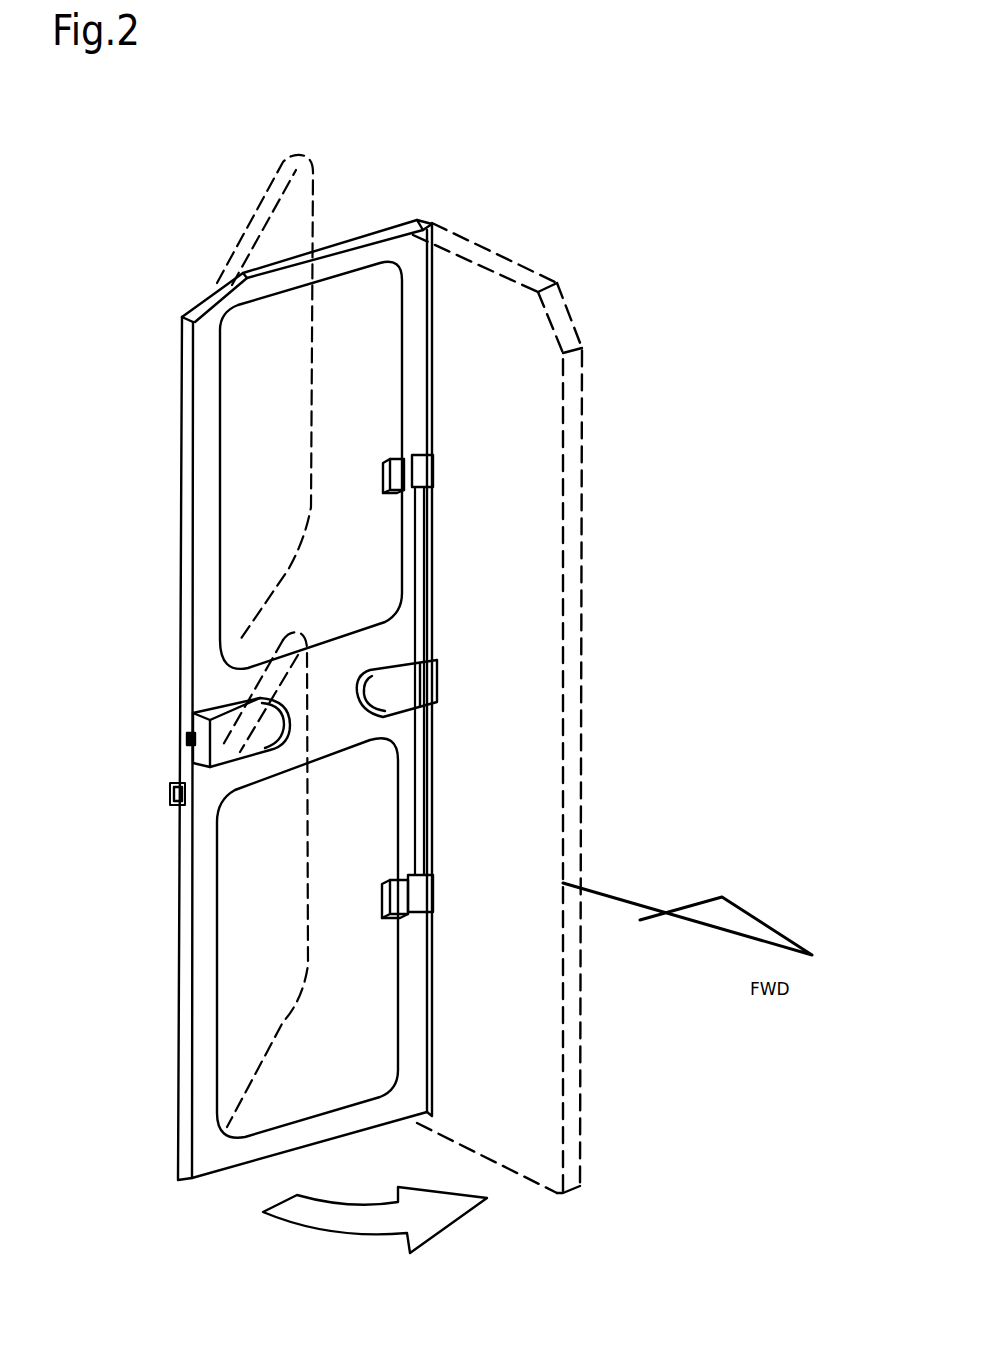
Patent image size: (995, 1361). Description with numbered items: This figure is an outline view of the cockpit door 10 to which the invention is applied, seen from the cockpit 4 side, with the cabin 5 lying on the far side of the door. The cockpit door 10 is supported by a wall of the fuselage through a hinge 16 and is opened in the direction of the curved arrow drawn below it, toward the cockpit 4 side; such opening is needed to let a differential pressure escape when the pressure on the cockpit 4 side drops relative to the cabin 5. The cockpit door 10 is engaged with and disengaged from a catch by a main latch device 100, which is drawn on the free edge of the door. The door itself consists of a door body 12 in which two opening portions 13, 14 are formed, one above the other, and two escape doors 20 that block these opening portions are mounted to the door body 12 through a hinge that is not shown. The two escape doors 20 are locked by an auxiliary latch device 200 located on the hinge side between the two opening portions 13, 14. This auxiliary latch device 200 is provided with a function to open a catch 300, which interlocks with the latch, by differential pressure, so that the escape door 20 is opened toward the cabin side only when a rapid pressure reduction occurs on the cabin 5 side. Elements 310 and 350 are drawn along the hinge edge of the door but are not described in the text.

The cockpit 4 is at (381, 1324).
The cabin 5 is at (109, 1099).
The cockpit door 10 is at (485, 220).
The door body 12 is at (340, 263).
The opening portion 13 is at (333, 567).
The opening portion 14 is at (335, 1064).
The hinge 16 is at (428, 222).
The escape door 20 is at (243, 240).
The main latch device 100 is at (220, 730).
The auxiliary latch device 200 is at (424, 687).
The catch 300 is at (435, 466).
The hinge rod 310 is at (428, 580).
The lower hinge 350 is at (423, 900).